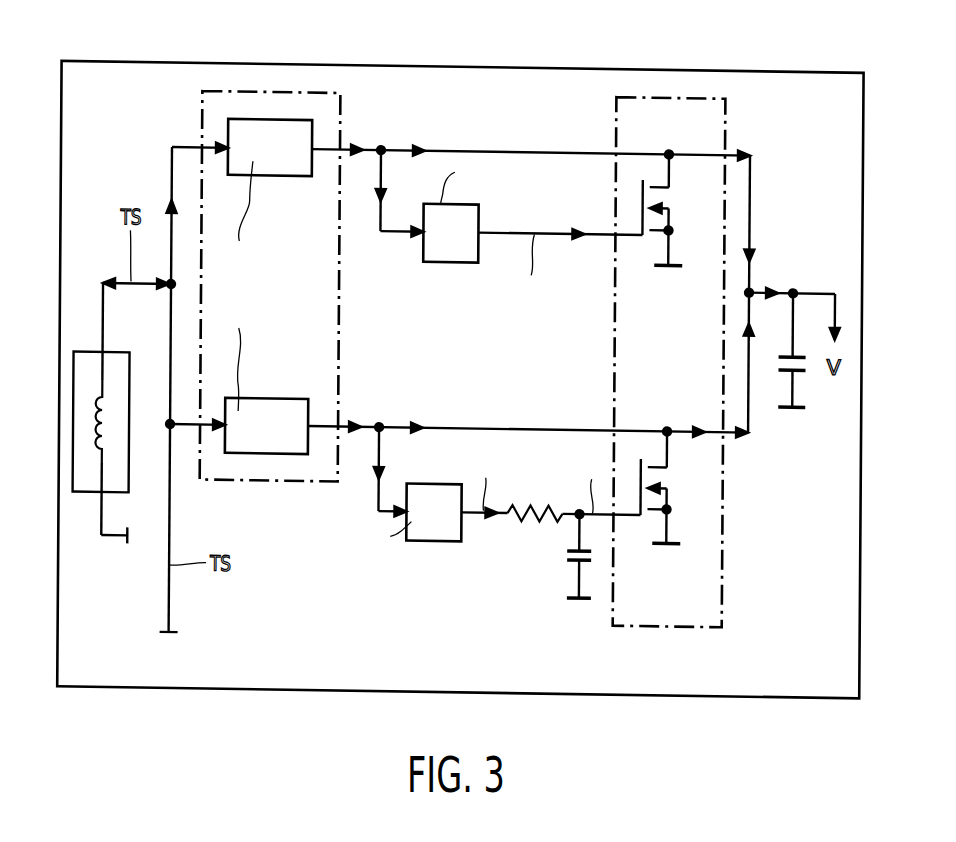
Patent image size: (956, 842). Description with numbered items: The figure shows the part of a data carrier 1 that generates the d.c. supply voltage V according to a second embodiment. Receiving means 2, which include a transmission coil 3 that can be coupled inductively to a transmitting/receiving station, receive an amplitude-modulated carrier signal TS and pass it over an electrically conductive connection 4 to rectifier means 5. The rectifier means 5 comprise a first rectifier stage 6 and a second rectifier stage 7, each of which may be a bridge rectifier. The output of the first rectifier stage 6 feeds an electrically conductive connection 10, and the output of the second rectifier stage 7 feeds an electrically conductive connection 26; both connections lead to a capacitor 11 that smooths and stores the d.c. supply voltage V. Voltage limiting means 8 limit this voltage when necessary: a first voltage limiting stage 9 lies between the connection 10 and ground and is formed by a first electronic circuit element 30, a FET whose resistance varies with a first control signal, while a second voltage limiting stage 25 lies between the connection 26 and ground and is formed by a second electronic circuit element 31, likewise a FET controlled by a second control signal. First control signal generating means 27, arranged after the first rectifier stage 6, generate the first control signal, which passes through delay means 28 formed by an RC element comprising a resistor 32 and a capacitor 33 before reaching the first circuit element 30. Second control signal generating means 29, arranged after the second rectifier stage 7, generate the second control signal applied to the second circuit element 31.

The data carrier 1 is at (180, 689).
The receiving means 2 is at (109, 442).
The transmission coil 3 is at (103, 440).
The electrically conductive connection 4 is at (172, 318).
The rectifier means 5 is at (200, 89).
The first rectifier stage 6 is at (268, 397).
The second rectifier stage 7 is at (270, 175).
The voltage limiting means 8 is at (727, 89).
The first voltage limiting stage 9 is at (673, 523).
The electrically conductive connection 10 is at (552, 423).
The capacitor 11 is at (798, 370).
The second voltage limiting stage 25 is at (673, 247).
The electrically conductive connection 26 is at (523, 146).
The first control signal generating means 27 is at (421, 538).
The delay means 28 is at (546, 545).
The second control signal generating means 29 is at (445, 259).
The first electronic circuit element 30 is at (657, 471).
The second electronic circuit element 31 is at (656, 190).
The resistor 32 is at (530, 500).
The capacitor 33 is at (574, 560).